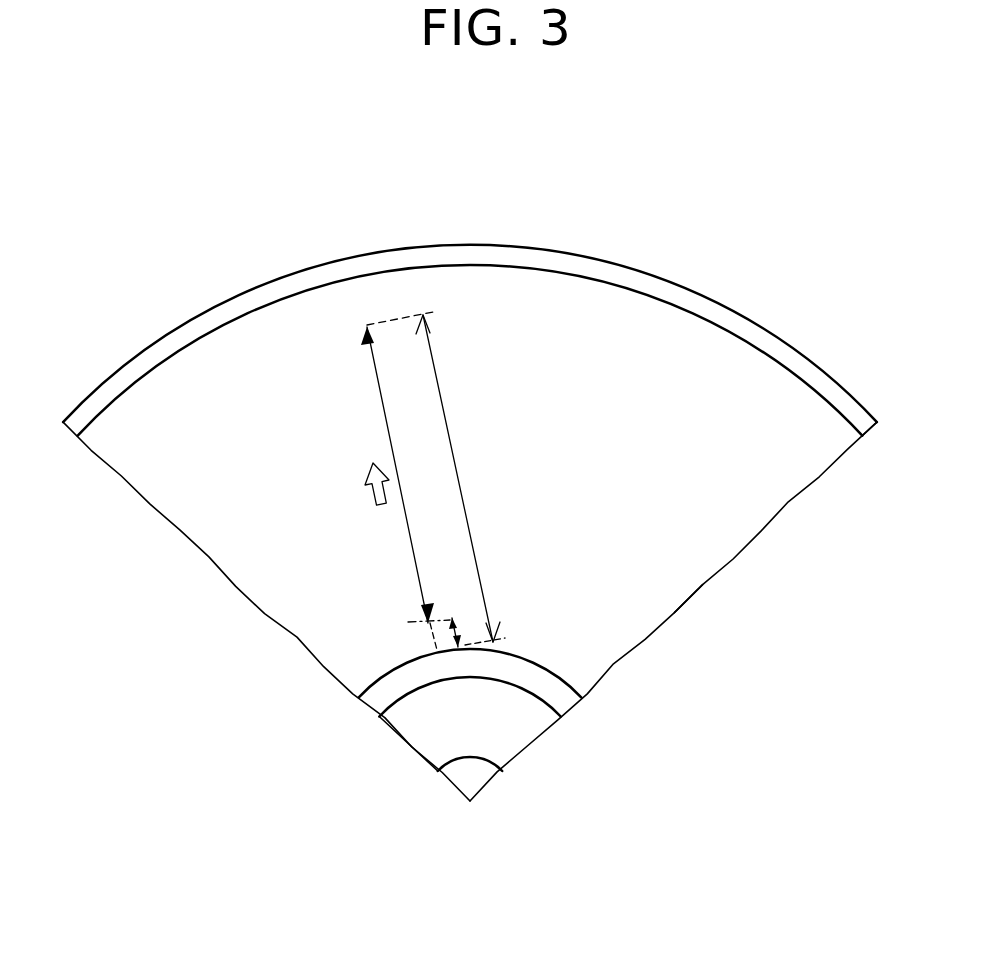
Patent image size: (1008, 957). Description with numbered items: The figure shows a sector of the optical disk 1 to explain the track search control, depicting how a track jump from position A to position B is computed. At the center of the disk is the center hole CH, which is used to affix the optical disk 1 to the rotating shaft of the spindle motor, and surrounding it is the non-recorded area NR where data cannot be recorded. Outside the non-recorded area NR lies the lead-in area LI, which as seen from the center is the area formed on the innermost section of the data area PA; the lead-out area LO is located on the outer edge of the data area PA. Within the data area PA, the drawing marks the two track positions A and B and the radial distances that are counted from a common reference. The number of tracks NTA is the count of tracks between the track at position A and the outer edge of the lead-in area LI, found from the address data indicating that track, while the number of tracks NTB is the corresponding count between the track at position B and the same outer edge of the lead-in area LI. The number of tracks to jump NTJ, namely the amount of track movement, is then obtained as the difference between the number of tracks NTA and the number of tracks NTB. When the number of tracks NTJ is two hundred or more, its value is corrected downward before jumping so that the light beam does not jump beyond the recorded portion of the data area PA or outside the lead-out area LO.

The optical disk 1 is at (564, 251).
The lead-out area LO is at (863, 425).
The lead-in area LI is at (558, 700).
The non-recorded area NR is at (518, 737).
The center hole CH is at (475, 778).
The data area PA is at (675, 595).
The number of tracks to jump NTJ is at (382, 413).
The number of tracks NTB is at (457, 468).
The number of tracks NTA is at (457, 632).
The position A is at (421, 630).
The position B is at (367, 325).